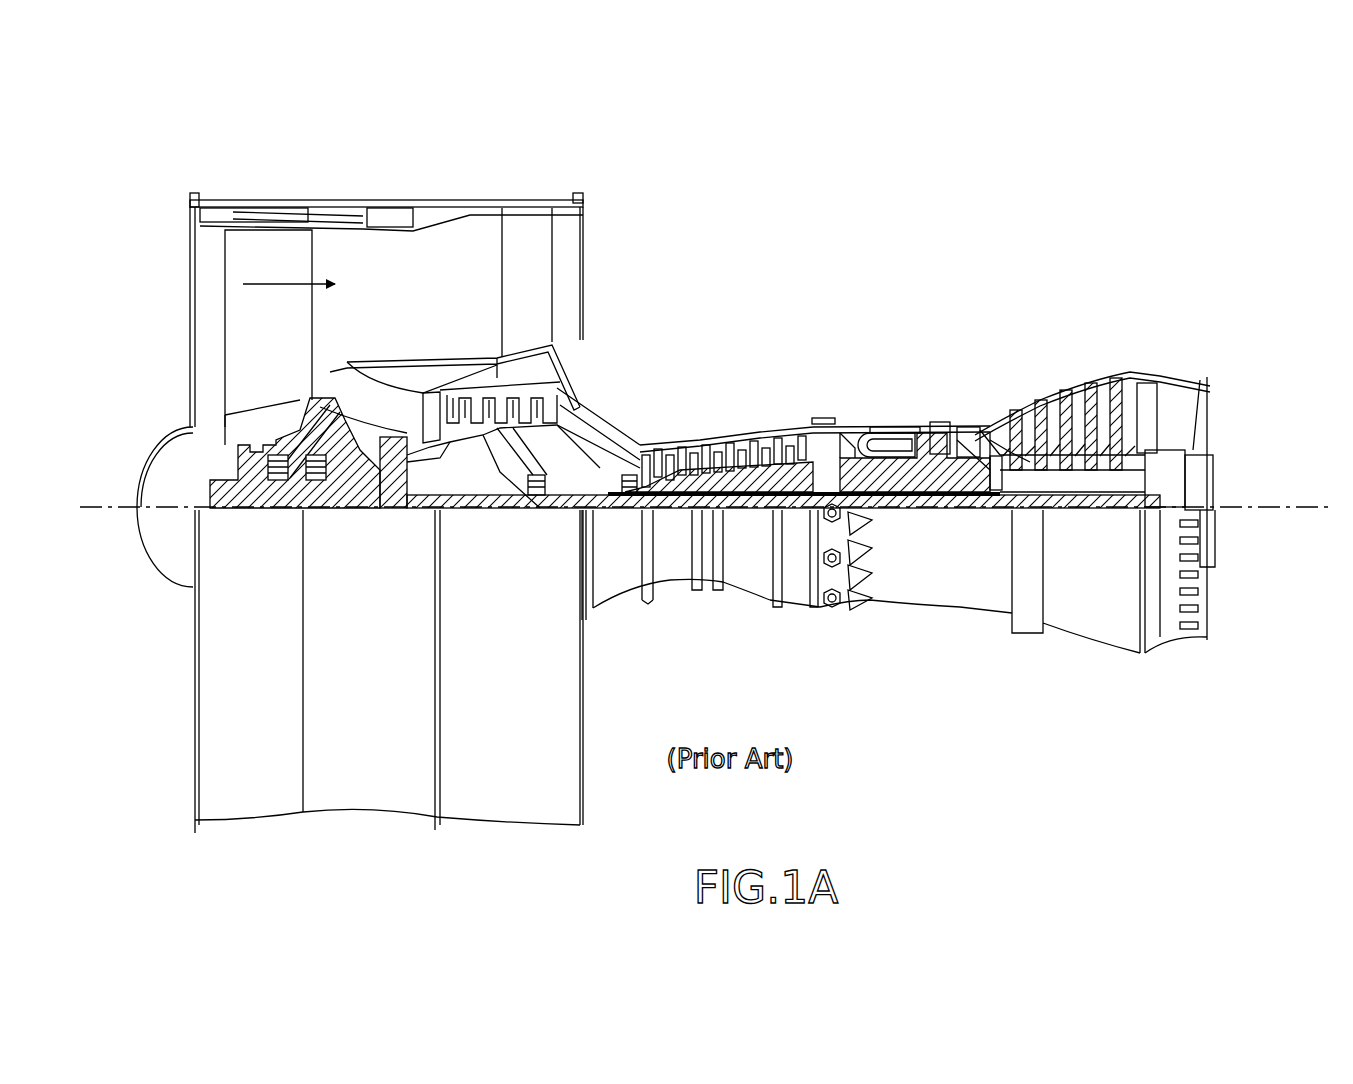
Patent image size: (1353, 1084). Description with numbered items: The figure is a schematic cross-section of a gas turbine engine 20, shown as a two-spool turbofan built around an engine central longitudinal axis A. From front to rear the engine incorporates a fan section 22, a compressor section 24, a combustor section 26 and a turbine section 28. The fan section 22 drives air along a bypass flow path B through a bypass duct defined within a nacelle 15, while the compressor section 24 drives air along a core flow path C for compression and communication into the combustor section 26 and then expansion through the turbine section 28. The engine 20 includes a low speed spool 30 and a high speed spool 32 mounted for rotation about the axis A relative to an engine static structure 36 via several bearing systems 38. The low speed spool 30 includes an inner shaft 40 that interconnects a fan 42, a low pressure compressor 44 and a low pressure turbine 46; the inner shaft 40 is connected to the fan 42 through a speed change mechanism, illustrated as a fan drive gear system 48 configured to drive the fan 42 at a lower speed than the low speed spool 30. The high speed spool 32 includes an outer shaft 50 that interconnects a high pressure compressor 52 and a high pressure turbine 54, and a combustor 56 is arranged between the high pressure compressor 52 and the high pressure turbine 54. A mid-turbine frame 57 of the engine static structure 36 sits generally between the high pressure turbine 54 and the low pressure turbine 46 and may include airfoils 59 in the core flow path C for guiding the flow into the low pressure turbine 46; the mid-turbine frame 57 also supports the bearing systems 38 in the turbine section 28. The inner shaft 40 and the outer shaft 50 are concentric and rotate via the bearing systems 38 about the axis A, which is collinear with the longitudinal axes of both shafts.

The gas turbine engine 20 is at (905, 208).
The fan section 22 is at (305, 185).
The nacelle 15 is at (385, 215).
The fan 42 is at (252, 323).
The bypass flow path B is at (272, 282).
The core flow path C is at (370, 388).
The compressor section 24 is at (625, 398).
The low pressure compressor 44 is at (552, 400).
The high pressure compressor 52 is at (745, 432).
The combustor section 26 is at (870, 383).
The combustor 56 is at (890, 440).
The high pressure turbine 54 is at (938, 428).
The mid-turbine frame 57 is at (992, 415).
The turbine section 28 is at (1030, 352).
The low pressure turbine 46 is at (1082, 392).
The airfoils 59 is at (990, 435).
The high speed spool 32 is at (805, 462).
The low speed spool 30 is at (752, 508).
The engine static structure 36 is at (798, 580).
The bearing systems 38 is at (542, 500).
The inner shaft 40 is at (603, 510).
The fan drive gear system 48 is at (400, 497).
The outer shaft 50 is at (862, 496).
The engine central longitudinal axis A is at (1262, 505).